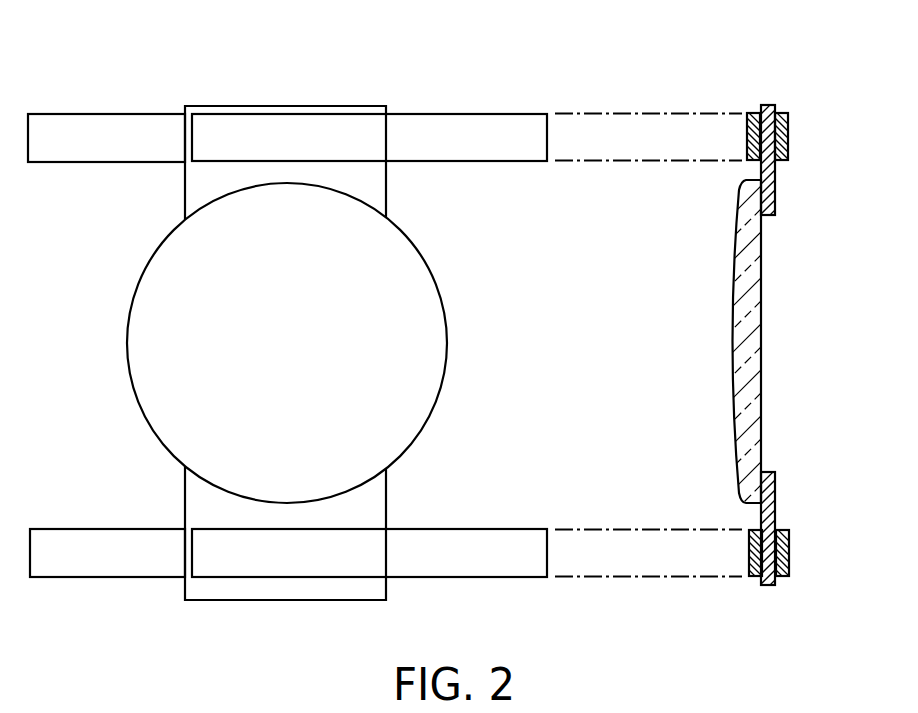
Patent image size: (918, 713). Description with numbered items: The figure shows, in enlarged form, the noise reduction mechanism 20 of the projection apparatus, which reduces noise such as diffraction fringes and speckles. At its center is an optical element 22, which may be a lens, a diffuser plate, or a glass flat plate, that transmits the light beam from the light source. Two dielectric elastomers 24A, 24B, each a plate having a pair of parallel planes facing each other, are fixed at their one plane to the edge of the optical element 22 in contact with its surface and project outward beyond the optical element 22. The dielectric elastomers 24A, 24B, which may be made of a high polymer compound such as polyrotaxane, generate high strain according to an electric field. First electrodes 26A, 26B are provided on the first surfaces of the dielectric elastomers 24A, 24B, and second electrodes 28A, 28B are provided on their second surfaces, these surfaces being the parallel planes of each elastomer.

The noise reduction mechanism 20 is at (175, 84).
The optical element 22 is at (447, 343).
The dielectric elastomer 24A is at (185, 193).
The dielectric elastomer 24B is at (185, 503).
The first electrode 26A is at (90, 113).
The first electrode 26B is at (86, 578).
The second electrode 28A is at (476, 112).
The second electrode 28B is at (472, 578).